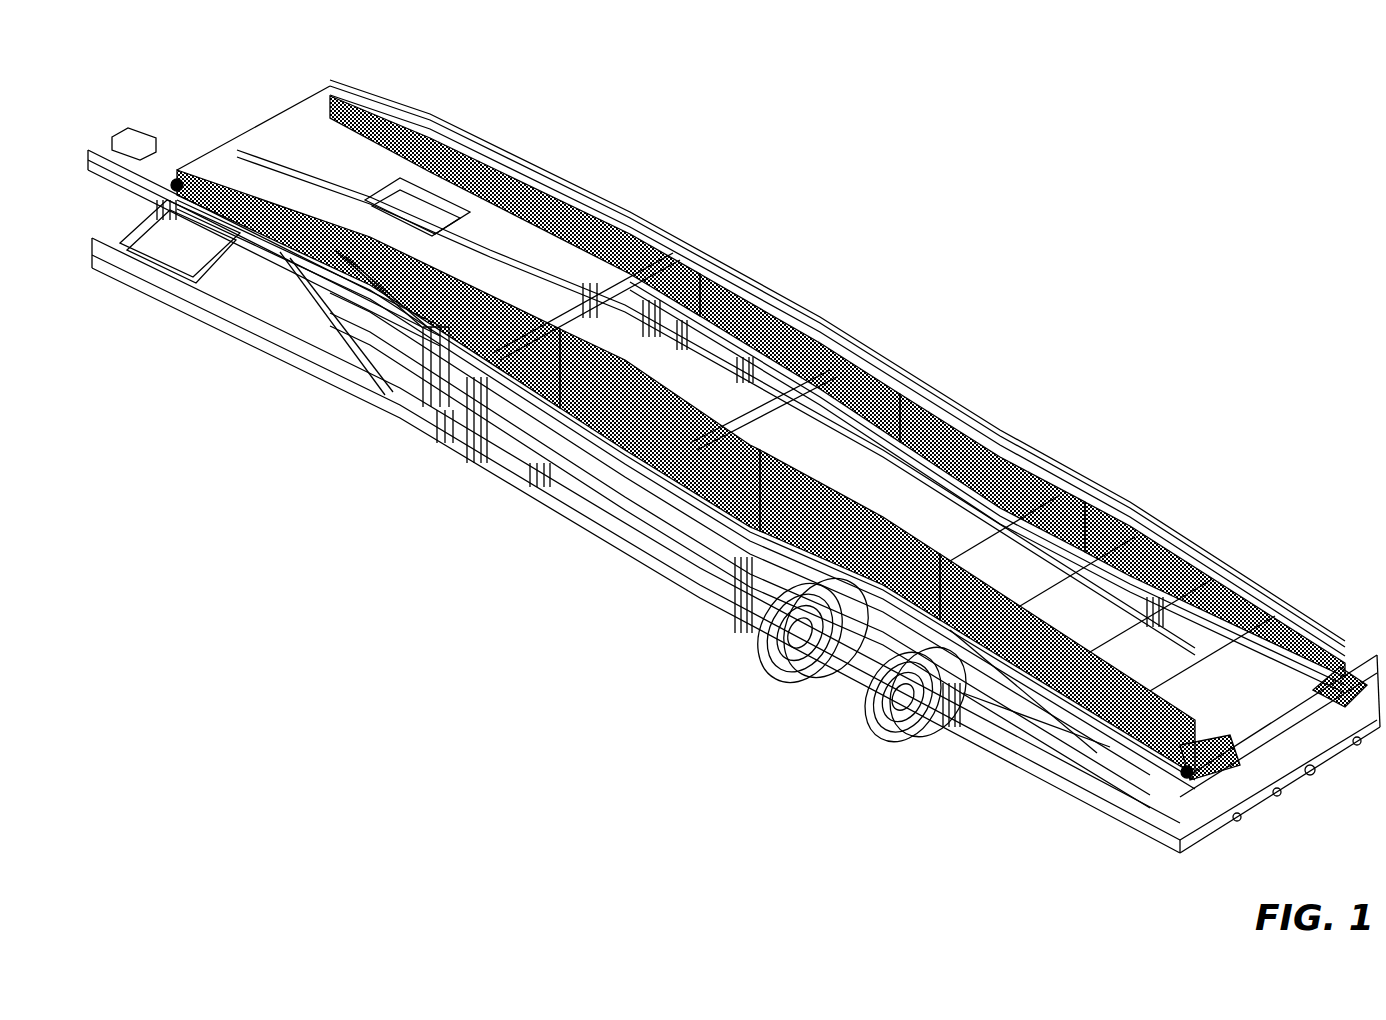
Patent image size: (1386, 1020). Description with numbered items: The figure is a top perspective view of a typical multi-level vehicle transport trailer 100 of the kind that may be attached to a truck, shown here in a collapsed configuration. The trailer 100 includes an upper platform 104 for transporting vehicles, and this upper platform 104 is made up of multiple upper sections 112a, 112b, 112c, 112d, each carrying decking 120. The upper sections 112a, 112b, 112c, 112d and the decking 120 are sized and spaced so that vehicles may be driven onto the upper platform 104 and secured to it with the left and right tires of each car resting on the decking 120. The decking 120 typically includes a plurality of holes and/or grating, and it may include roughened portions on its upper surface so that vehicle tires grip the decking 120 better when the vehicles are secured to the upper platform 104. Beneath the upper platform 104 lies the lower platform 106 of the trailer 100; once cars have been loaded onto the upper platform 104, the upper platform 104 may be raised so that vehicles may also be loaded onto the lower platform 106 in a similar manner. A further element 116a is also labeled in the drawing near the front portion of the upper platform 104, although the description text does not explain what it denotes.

The multi-level vehicle transport trailer 100 is at (1212, 76).
The upper platform 104 is at (934, 218).
The lower platform 106 is at (737, 540).
The upper section 112a is at (586, 183).
The upper section 112b is at (766, 257).
The upper section 112c is at (1032, 420).
The upper section 112d is at (1268, 552).
The front deck tie-down rail 116a is at (377, 187).
The decking 120 is at (600, 233).